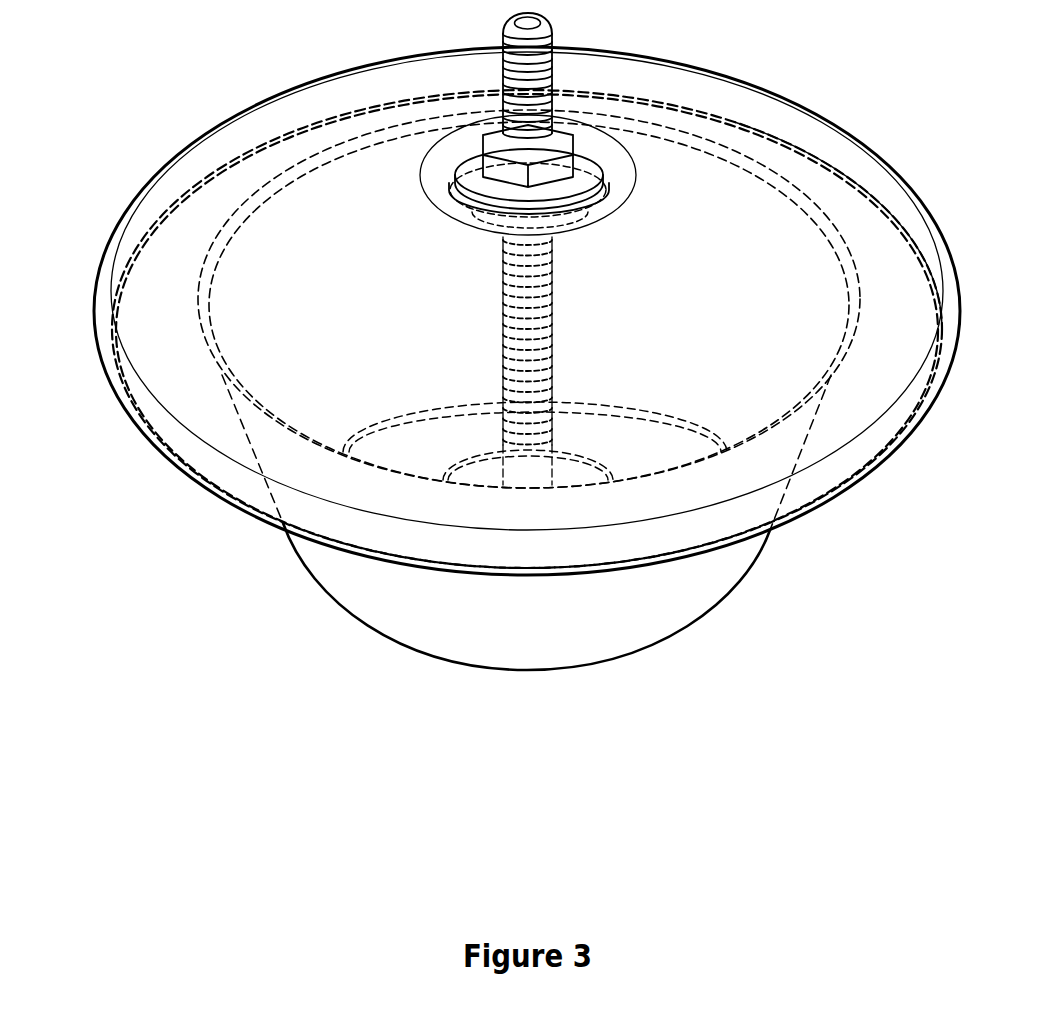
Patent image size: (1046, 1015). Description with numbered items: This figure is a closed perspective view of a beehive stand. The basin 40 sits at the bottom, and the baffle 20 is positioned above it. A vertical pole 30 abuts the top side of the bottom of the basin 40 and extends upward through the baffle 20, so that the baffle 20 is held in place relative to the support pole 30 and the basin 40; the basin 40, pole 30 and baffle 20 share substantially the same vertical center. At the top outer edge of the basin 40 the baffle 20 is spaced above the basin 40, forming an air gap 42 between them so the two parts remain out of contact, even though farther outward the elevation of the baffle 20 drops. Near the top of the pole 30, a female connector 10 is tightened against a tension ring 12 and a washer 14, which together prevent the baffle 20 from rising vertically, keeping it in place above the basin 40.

The female connector 10 is at (507, 157).
The tension ring 12 is at (547, 175).
The washer 14 is at (498, 192).
The baffle 20 is at (173, 330).
The vertical pole 30 is at (512, 95).
The basin 40 is at (315, 562).
The air gap 42 is at (881, 382).